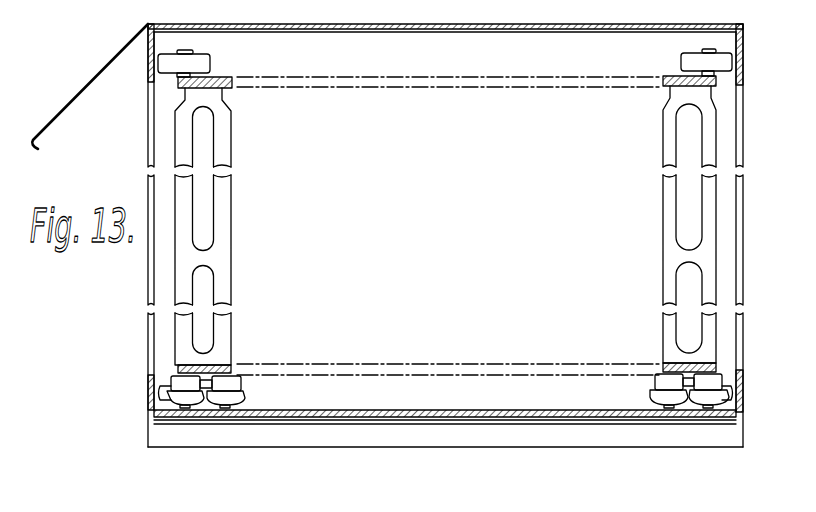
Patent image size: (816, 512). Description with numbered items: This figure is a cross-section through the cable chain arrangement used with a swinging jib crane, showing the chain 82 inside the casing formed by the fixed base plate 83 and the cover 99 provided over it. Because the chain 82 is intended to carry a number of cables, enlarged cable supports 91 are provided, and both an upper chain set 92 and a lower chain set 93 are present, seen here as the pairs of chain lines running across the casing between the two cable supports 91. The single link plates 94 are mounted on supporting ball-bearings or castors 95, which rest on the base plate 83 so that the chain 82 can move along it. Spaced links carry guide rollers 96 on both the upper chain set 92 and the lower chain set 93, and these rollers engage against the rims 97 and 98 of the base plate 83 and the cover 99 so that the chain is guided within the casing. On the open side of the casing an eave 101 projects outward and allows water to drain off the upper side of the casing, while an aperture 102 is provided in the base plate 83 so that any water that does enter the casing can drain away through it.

The chain 82 is at (465, 362).
The base plate 83 is at (405, 418).
The cable supports 91 is at (222, 332).
The upper chain set 92 is at (342, 87).
The lower chain set 93 is at (383, 361).
The single link plates 94 is at (218, 370).
The ball-bearings or castors 95 is at (238, 382).
The guide rollers 96 is at (697, 58).
The rim 97 is at (742, 392).
The rim 98 is at (744, 67).
The cover 99 is at (362, 25).
The eave 101 is at (87, 83).
The aperture 102 is at (458, 418).